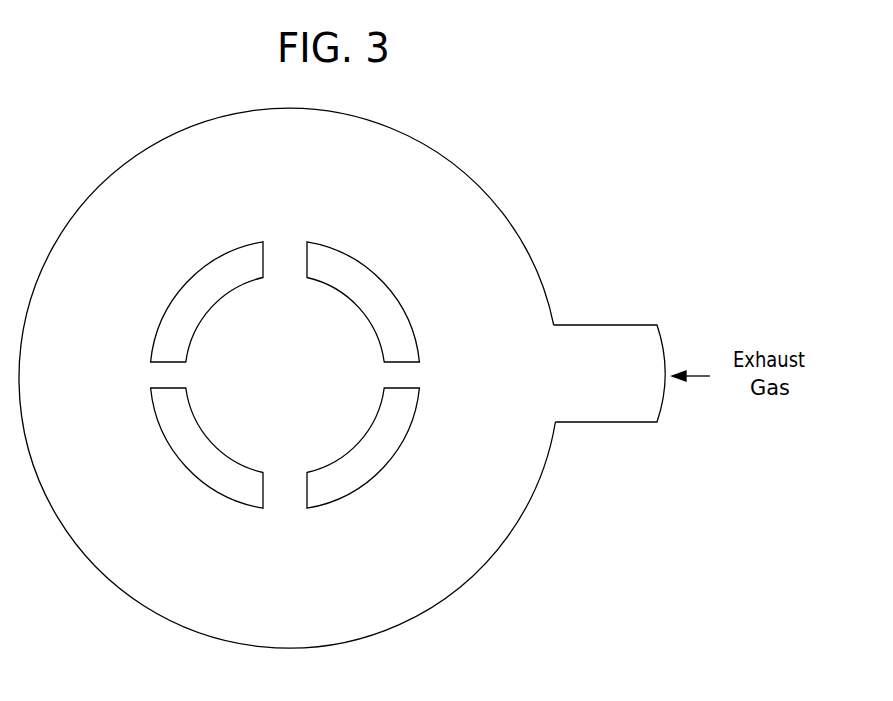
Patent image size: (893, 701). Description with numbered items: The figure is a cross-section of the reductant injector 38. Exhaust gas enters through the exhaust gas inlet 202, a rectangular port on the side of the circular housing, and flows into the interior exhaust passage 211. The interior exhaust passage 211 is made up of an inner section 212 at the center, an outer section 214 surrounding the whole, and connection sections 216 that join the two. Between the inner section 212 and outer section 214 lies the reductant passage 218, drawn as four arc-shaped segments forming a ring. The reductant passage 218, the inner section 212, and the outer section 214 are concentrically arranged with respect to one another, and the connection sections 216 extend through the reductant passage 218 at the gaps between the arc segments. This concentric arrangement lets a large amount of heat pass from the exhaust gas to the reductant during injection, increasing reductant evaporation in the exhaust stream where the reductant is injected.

The reductant injector 38 is at (733, 156).
The exhaust gas inlet 202 is at (667, 313).
The interior exhaust passage 211 is at (510, 228).
The inner section 212 is at (303, 387).
The outer section 214 is at (415, 223).
The connection sections 216 is at (281, 378).
The reductant passage 218 is at (193, 276).